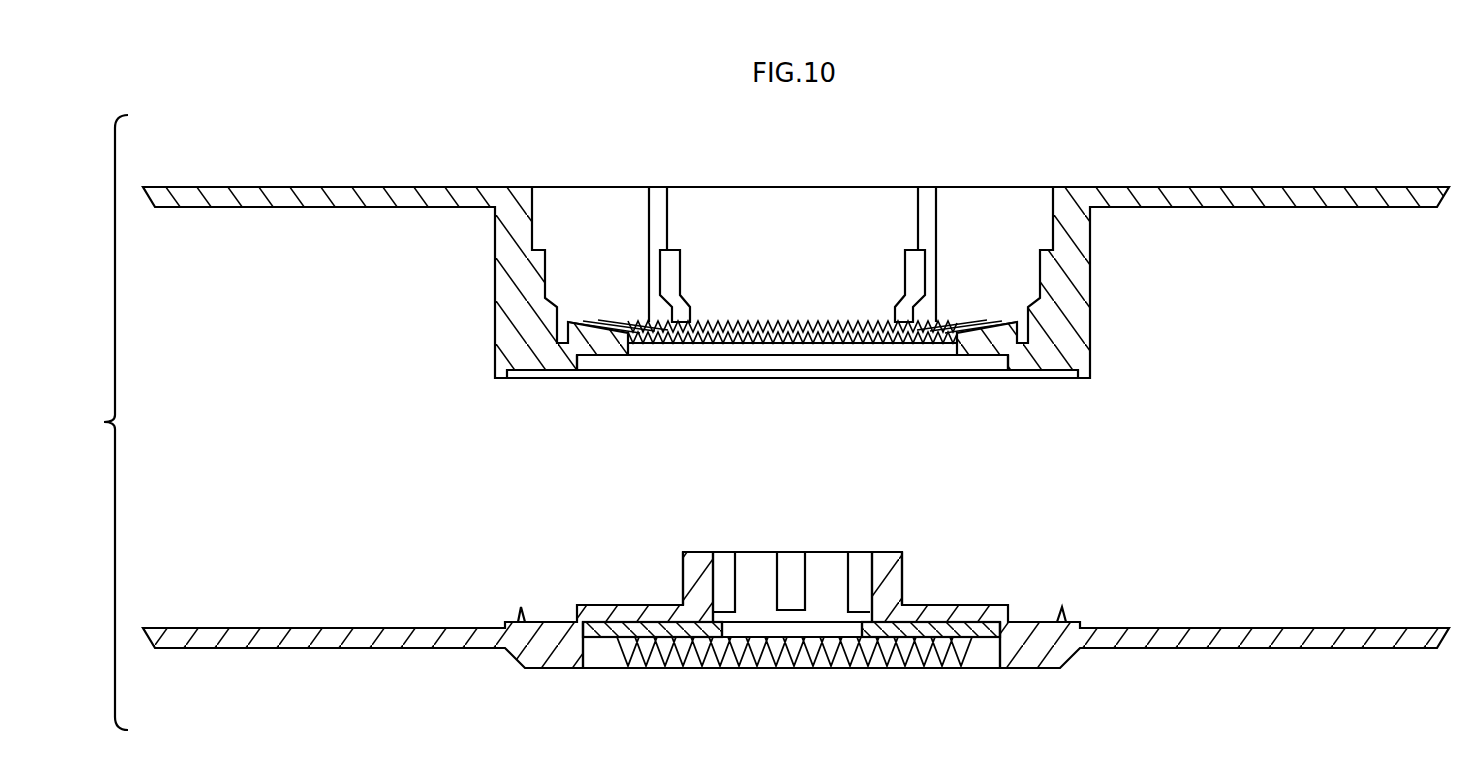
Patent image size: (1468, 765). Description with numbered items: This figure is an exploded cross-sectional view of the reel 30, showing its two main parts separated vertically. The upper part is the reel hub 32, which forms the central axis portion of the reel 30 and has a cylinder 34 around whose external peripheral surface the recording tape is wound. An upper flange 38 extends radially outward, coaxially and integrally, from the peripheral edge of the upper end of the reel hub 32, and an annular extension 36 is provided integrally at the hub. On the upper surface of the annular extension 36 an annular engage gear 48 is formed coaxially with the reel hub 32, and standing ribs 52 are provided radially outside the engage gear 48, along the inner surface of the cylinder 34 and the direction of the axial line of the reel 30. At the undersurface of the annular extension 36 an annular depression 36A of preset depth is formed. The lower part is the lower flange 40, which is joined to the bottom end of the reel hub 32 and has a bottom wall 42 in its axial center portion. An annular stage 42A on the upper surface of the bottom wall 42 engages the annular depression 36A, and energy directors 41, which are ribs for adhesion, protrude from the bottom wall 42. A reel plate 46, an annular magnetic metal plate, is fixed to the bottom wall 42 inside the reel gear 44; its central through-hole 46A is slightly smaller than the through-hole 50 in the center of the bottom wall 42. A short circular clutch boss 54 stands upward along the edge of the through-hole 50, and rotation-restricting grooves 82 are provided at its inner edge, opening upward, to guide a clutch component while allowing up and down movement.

The reel 30 is at (1288, 122).
The reel hub 32 is at (796, 312).
The cylinder 34 is at (796, 282).
The annular extension 36 is at (1037, 379).
The annular depression 36A is at (985, 357).
The upper flange 38 is at (1275, 209).
The lower flange 40 is at (1273, 627).
The energy directors 41 is at (521, 607).
The bottom wall 42 is at (1043, 622).
The annular stage 42A is at (975, 605).
The reel gear 44 is at (768, 668).
The reel plate 46 is at (607, 632).
The through-hole 46A is at (737, 632).
The engage gear 48 is at (977, 322).
The through-hole 50 is at (847, 632).
The standing ribs 52 is at (682, 272).
The clutch boss 54 is at (682, 577).
The rotation-restricting grooves 82 is at (787, 580).